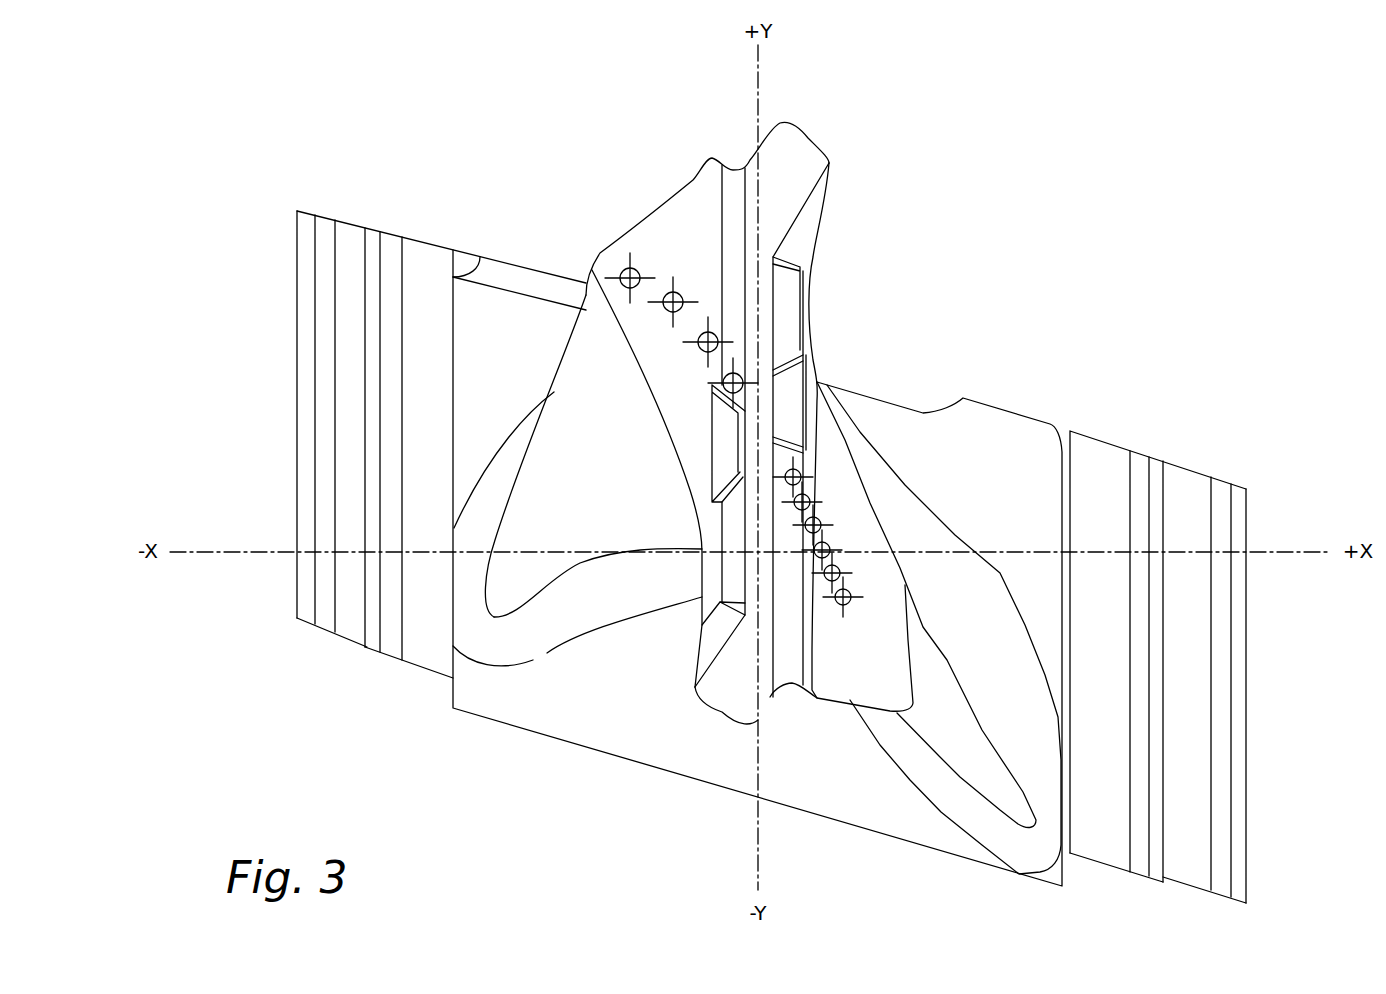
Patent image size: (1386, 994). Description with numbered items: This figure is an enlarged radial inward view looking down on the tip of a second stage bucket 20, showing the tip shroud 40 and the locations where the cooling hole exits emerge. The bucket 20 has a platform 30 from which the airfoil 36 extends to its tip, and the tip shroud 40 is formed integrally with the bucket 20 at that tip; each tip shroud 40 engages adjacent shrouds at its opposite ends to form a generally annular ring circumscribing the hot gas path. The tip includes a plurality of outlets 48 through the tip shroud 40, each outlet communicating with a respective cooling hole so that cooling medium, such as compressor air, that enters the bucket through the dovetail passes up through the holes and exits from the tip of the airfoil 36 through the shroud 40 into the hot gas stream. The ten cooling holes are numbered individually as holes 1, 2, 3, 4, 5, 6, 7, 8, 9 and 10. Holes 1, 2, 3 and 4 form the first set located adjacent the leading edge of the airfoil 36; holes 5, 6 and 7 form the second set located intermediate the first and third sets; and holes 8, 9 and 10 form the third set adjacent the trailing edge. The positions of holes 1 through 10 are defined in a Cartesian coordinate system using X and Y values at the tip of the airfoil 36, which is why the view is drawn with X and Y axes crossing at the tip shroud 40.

The cooling hole 1 is at (622, 269).
The cooling hole 2 is at (668, 293).
The cooling hole 3 is at (704, 333).
The cooling hole 4 is at (742, 378).
The cooling hole 5 is at (800, 471).
The cooling hole 6 is at (808, 497).
The cooling hole 7 is at (820, 520).
The cooling hole 8 is at (830, 546).
The cooling hole 9 is at (840, 570).
The cooling hole 10 is at (851, 594).
The bucket 20 is at (596, 435).
The platform 30 is at (567, 704).
The airfoil 36 is at (565, 356).
The tip shroud 40 is at (860, 135).
The outlets 48 is at (817, 700).